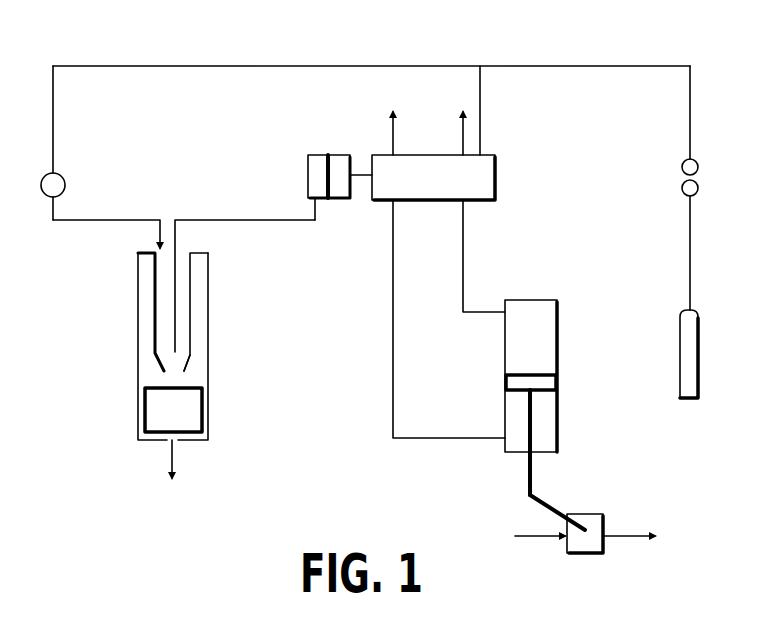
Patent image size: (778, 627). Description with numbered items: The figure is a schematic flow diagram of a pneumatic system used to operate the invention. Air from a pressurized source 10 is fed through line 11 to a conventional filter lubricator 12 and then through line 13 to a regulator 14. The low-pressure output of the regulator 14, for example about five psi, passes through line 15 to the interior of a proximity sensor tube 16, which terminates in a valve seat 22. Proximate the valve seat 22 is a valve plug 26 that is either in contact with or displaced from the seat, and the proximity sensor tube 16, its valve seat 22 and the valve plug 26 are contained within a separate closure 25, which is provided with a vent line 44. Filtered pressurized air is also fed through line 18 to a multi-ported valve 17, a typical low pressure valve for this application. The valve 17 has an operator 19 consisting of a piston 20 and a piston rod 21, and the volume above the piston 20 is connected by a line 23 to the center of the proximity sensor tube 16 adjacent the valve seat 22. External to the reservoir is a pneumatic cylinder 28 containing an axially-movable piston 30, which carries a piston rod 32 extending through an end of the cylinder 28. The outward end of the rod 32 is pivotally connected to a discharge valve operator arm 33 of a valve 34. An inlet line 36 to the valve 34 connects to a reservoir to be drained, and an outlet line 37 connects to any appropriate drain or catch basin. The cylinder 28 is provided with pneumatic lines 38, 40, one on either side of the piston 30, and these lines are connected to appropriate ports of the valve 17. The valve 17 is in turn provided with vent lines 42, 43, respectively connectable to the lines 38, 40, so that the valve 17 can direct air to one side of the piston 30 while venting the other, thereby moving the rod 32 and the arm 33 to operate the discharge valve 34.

The pressurized source 10 is at (680, 345).
The line 11 is at (688, 253).
The filter lubricator 12 is at (683, 160).
The line 13 is at (548, 67).
The regulator 14 is at (64, 191).
The line 15 is at (83, 221).
The proximity sensor tube 16 is at (155, 302).
The multi-ported valve 17 is at (497, 178).
The line 18 is at (482, 118).
The operator 19 is at (290, 136).
The piston 20 is at (327, 173).
The piston rod 21 is at (368, 174).
The valve seat 22 is at (186, 368).
The line 23 is at (177, 243).
The closure 25 is at (138, 408).
The valve plug 26 is at (203, 412).
The pneumatic cylinder 28 is at (505, 357).
The piston 30 is at (540, 375).
The piston rod 32 is at (528, 474).
The discharge valve operator arm 33 is at (545, 502).
The valve 34 is at (585, 555).
The inlet line 36 is at (528, 534).
The outlet line 37 is at (626, 534).
The pneumatic line 38 is at (465, 253).
The pneumatic line 40 is at (393, 254).
The vent line 42 is at (449, 129).
The vent line 43 is at (406, 129).
The vent line 44 is at (170, 459).